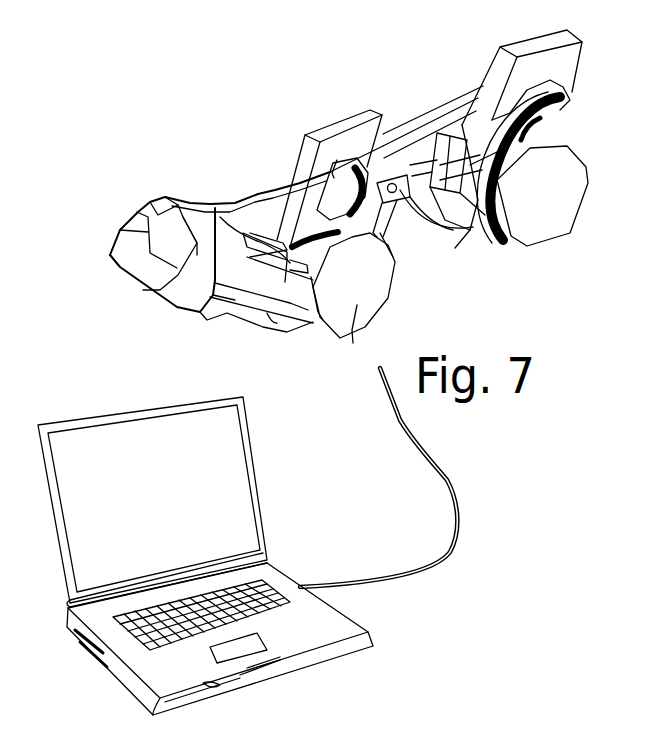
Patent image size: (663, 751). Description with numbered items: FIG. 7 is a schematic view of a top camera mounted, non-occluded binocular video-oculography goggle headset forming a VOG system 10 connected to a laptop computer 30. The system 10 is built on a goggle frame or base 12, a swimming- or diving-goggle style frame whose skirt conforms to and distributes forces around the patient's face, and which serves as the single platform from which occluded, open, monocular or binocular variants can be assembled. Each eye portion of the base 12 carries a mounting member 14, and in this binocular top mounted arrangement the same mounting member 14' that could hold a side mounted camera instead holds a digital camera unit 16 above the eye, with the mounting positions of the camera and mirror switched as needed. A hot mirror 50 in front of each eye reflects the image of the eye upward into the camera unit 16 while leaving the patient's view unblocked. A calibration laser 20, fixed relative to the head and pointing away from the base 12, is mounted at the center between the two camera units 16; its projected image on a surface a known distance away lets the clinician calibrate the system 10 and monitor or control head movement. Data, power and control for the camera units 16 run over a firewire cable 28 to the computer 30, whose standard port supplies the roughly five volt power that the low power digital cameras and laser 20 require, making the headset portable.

The VOG system 10 is at (357, 68).
The goggle frame or base 12 is at (223, 197).
The mounting member 14 is at (239, 262).
The mounting member 14' is at (496, 215).
The digital camera unit 16 is at (307, 158).
The laser 20 is at (400, 207).
The firewire cable 28 is at (443, 471).
The computer 30 is at (327, 618).
The hot mirror 50 is at (560, 229).